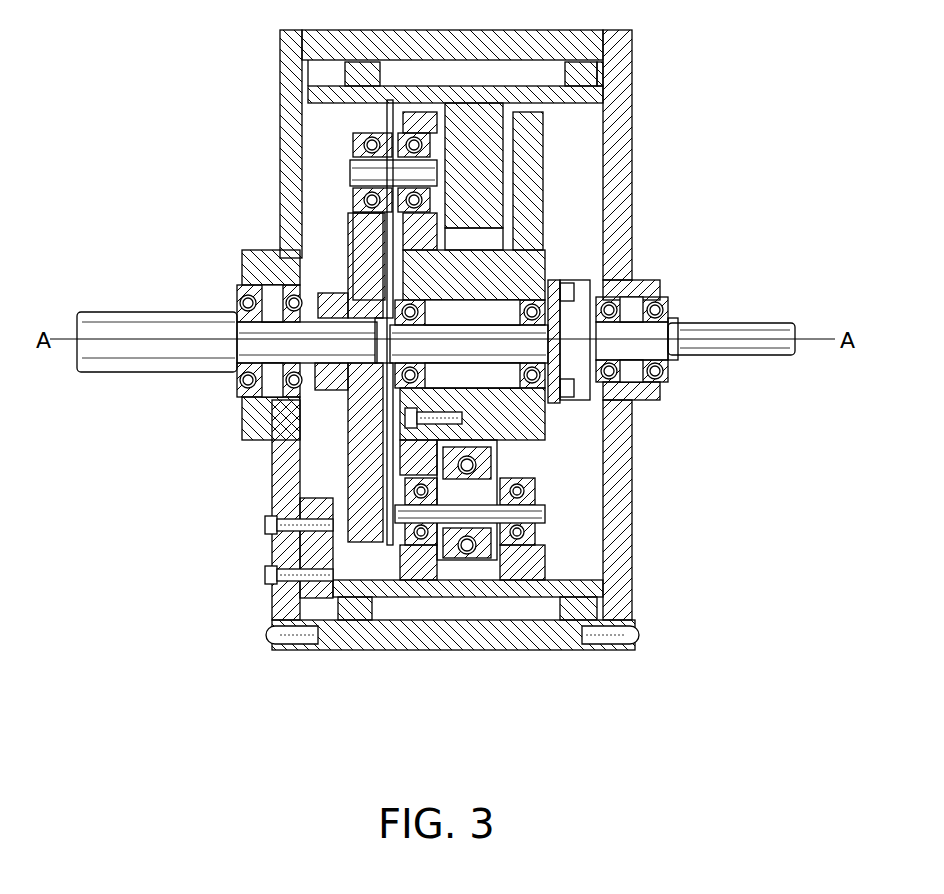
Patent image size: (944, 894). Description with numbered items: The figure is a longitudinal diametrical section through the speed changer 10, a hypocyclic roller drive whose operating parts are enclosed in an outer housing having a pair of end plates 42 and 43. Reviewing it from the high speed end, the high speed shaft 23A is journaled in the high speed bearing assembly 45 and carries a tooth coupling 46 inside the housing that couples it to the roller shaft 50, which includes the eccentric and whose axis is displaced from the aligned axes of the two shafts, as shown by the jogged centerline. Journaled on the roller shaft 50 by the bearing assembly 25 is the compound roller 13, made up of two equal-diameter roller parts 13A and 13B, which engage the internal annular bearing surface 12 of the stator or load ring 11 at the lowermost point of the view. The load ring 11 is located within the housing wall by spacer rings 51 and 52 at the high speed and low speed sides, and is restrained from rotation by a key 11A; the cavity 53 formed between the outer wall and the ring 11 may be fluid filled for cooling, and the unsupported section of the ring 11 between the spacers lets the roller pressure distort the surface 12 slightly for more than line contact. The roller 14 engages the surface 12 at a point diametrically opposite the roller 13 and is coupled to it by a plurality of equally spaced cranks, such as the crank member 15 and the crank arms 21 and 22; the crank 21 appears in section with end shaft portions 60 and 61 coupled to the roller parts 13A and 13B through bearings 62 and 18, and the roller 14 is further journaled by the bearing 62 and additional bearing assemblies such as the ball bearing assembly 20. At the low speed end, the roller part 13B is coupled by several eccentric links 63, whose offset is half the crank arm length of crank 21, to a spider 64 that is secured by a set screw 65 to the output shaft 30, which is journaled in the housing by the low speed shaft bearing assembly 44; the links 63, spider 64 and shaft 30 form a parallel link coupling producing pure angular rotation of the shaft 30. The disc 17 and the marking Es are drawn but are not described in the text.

The speed changer 10 is at (612, 650).
The stator or load ring 11 is at (524, 96).
The key 11A is at (300, 588).
The internal annular bearing surface 12 is at (570, 103).
The internal hypocyclic roller 13 is at (330, 498).
The roller part 13A is at (552, 590).
The roller part 13B is at (410, 600).
The internal hypocyclic roller 14 is at (470, 115).
The crank member 15 is at (657, 280).
The disc 17 is at (392, 160).
The bearing 18 is at (545, 513).
The roller or ball bearing assembly 20 is at (235, 385).
The crank arm 21 is at (512, 585).
The crank arm 22 is at (525, 205).
The high speed shaft 23A is at (760, 355).
The bearing assembly 25 is at (548, 300).
The output shaft 30 is at (140, 312).
The end plate 42 is at (280, 132).
The end plate 43 is at (632, 205).
The low speed shaft bearing assembly 44 is at (250, 258).
The high speed bearing assembly 45 is at (660, 285).
The tooth coupling 46 is at (600, 382).
The roller shaft 50 is at (545, 395).
The spacer ring 51 is at (590, 612).
The spacer ring 52 is at (352, 648).
The cavity 53 is at (448, 610).
The end shaft portion 60 is at (405, 530).
The end shaft portion 61 is at (538, 520).
The bearing 62 is at (497, 460).
The eccentric link 63 is at (355, 168).
The spider 64 is at (353, 225).
The set screw 65 is at (340, 330).
The sensor element Es is at (582, 285).